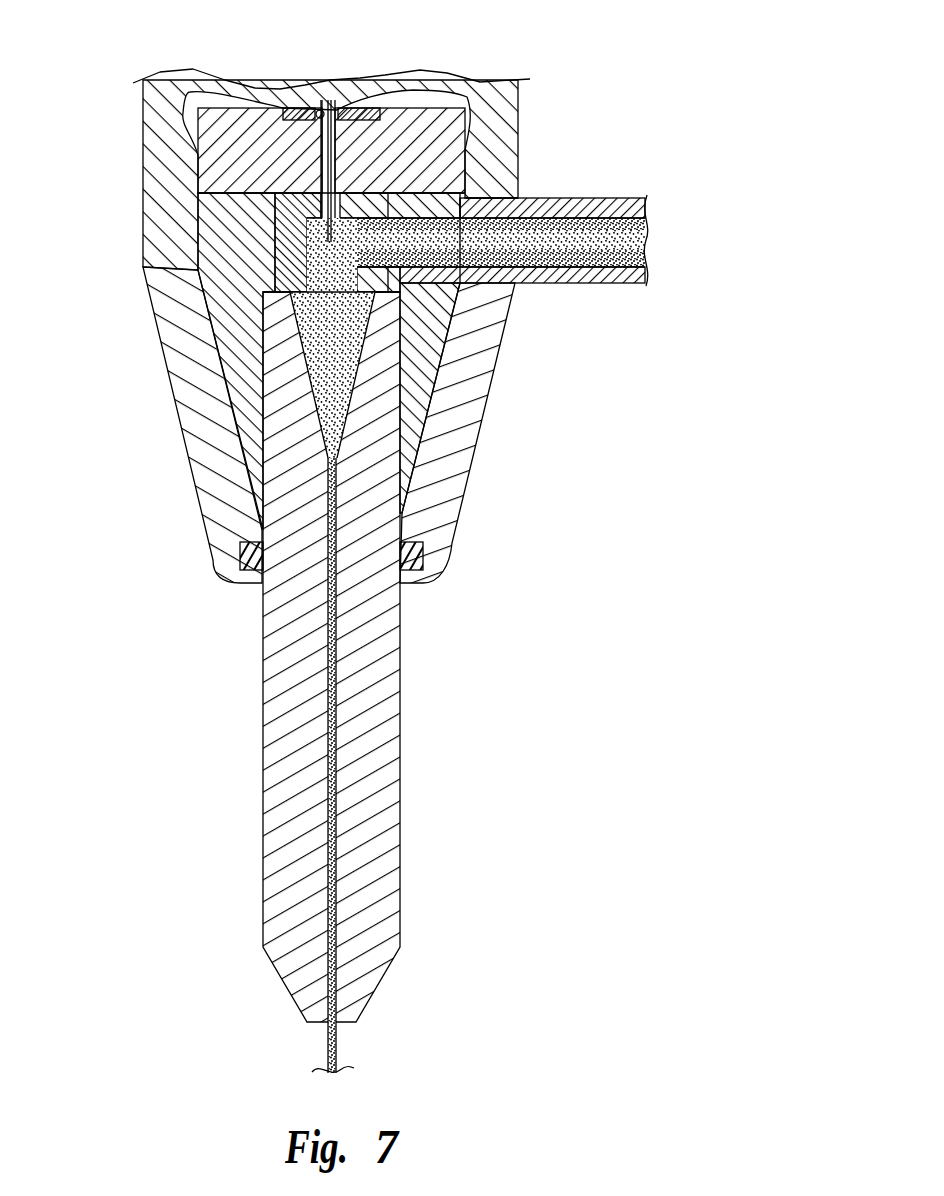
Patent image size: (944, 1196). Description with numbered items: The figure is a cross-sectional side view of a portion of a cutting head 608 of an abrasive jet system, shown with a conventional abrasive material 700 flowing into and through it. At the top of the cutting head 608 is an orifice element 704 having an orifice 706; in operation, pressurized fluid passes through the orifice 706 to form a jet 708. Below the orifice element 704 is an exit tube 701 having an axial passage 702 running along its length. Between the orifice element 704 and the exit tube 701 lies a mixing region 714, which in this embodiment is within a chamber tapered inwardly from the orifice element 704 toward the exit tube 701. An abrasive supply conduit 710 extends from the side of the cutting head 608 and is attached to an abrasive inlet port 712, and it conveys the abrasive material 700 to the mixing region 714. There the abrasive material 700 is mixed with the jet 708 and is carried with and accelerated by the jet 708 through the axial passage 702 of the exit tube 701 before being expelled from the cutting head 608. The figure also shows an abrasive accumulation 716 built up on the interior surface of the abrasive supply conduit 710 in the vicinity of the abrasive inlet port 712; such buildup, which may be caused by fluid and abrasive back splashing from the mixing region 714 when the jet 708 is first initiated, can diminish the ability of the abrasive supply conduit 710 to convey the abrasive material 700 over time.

The cutting head 608 is at (664, 104).
The abrasive material 700 is at (600, 244).
The exit tube 701 is at (400, 803).
The axial passage 702 is at (340, 660).
The orifice element 704 is at (367, 110).
The orifice 706 is at (333, 110).
The jet 708 is at (332, 172).
The abrasive supply conduit 710 is at (605, 283).
The abrasive inlet port 712 is at (493, 212).
The mixing region 714 is at (357, 357).
The abrasive accumulation 716 is at (543, 268).